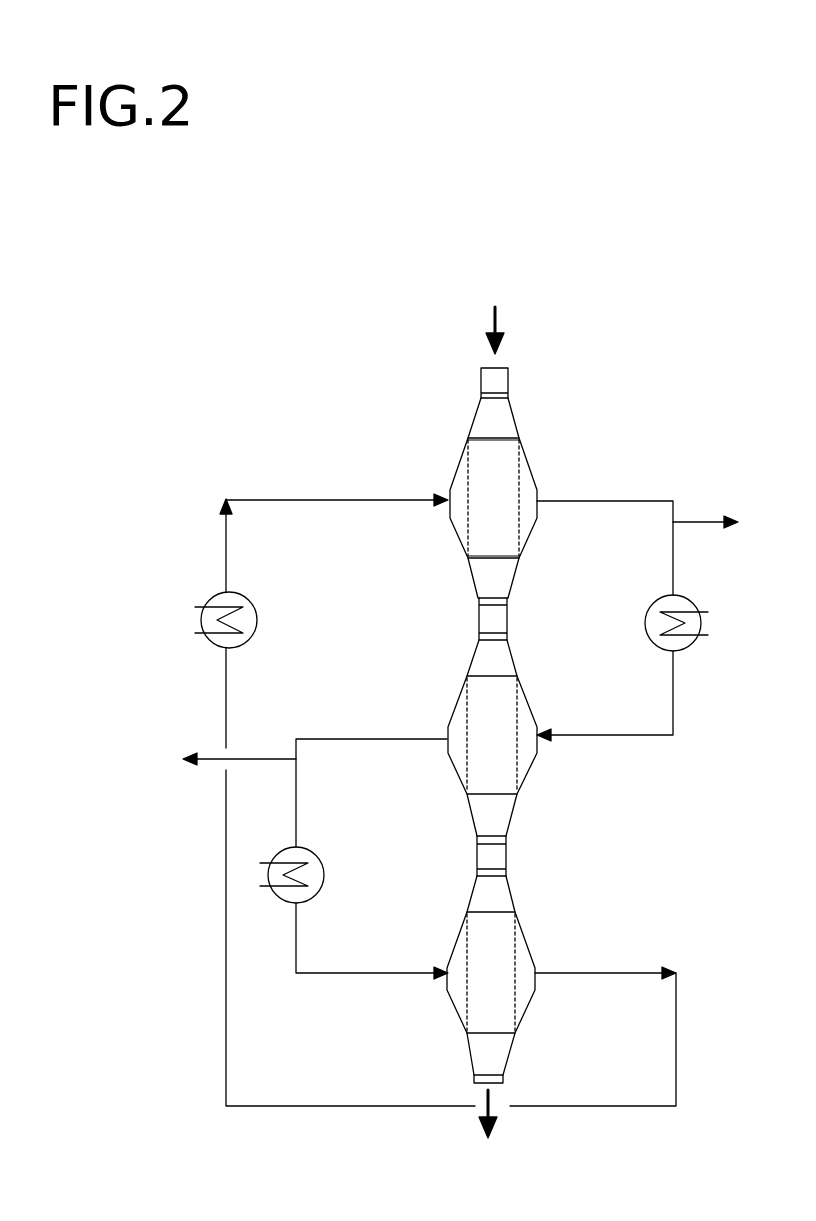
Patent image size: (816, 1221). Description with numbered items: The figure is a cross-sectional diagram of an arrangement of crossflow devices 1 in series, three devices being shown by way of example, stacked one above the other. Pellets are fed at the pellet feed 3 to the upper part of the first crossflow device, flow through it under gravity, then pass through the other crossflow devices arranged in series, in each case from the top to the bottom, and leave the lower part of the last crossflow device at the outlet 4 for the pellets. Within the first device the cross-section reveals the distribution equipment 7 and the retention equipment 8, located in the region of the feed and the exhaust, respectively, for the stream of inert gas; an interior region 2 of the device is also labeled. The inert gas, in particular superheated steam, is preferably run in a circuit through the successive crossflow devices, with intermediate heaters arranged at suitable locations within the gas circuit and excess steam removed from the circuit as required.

The crossflow device 1 is at (528, 422).
The inner chamber of vessel 2 is at (496, 480).
The pellet feed 3 is at (494, 312).
The outlet for the pellets 4 is at (488, 1138).
The distribution equipment 7 is at (465, 513).
The retention equipment 8 is at (520, 513).